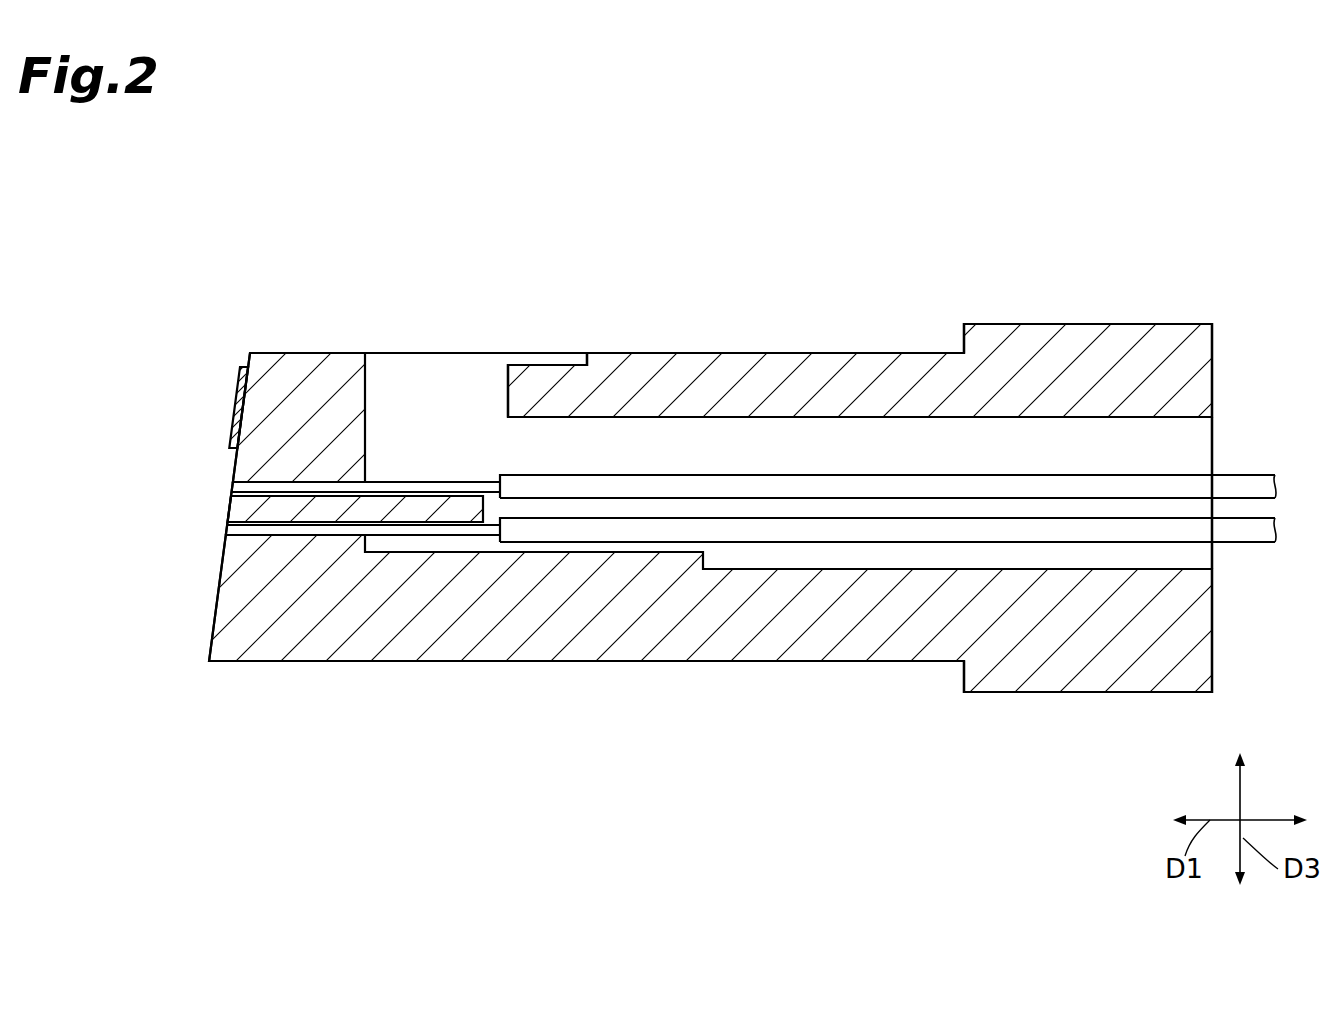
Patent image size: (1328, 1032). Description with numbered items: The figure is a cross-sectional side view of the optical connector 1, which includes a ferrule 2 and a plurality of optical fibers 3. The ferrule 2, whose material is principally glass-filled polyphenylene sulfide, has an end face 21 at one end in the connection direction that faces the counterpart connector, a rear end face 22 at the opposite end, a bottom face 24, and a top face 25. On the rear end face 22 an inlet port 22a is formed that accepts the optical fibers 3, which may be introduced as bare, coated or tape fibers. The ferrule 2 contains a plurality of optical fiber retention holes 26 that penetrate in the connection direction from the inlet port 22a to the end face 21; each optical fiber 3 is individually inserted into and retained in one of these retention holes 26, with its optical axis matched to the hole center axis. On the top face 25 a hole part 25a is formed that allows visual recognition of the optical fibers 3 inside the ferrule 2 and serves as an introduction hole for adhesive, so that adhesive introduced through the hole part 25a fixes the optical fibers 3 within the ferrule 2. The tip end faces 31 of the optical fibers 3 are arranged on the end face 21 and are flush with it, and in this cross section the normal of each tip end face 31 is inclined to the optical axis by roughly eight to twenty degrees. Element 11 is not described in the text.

The optical connector 1 is at (1080, 175).
The ferrule 2 is at (880, 346).
The optical fiber 3 is at (452, 530).
The optical element 11 is at (237, 405).
The end face 21 is at (215, 612).
The rear end face 22 is at (1213, 599).
The inlet port 22a is at (1192, 418).
The bottom face 24 is at (522, 663).
The top face 25 is at (697, 353).
The hole part 25a is at (508, 380).
The optical fiber retention hole 26 is at (248, 484).
The tip end face 31 is at (228, 527).